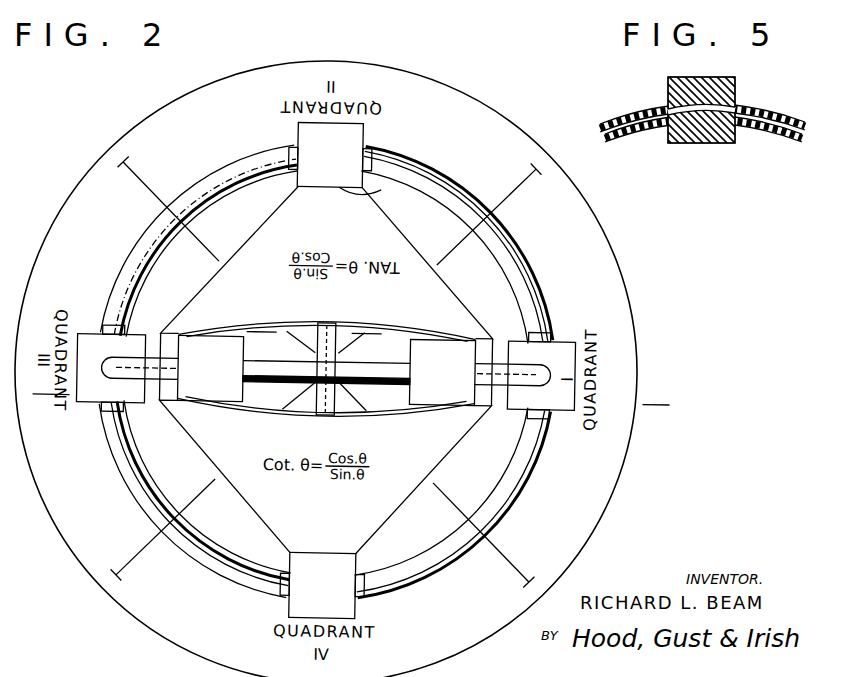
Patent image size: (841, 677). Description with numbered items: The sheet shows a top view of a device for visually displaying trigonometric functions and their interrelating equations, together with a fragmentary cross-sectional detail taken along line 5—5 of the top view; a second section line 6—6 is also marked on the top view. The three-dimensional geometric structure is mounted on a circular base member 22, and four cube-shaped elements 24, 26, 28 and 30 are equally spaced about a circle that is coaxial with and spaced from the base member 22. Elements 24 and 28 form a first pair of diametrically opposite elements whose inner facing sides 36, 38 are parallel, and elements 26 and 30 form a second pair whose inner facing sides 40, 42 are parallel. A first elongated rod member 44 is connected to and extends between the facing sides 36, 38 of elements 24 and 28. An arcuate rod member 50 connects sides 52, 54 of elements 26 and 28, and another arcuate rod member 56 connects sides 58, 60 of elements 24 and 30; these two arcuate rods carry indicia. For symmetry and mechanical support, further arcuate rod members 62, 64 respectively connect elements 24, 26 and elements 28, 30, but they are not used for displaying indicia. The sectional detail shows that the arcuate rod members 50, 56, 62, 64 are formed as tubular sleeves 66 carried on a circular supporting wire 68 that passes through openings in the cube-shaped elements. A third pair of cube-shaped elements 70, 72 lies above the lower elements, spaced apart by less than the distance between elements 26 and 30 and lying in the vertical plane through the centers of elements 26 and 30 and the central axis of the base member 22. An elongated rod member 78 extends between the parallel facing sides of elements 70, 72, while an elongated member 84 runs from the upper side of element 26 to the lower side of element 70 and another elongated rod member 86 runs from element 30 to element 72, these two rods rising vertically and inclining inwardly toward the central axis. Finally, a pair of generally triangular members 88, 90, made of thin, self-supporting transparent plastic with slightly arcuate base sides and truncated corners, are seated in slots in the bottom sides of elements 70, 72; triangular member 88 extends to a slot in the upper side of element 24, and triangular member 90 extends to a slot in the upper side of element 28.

In FIG. 2, the section line 5— 5 is at (324, 381).
In FIG. 2, the section line 6— 6 is at (351, 370).
In FIG. 2, the circular base member 22 is at (337, 366).
In FIG. 2, the cube-shaped element 24 is at (349, 153).
In FIG. 2, the cube-shaped element 26 is at (542, 390).
In FIG. 5, the cube-shaped element 28 is at (690, 148).
In FIG. 2, the cube-shaped element 30 is at (111, 382).
In FIG. 2, the inner facing side 36 is at (370, 191).
In FIG. 2, the inner facing side 38 is at (330, 569).
In FIG. 2, the inner facing side 40 is at (513, 346).
In FIG. 2, the inner facing side 42 is at (140, 338).
In FIG. 2, the first elongated rod member 44 is at (326, 369).
In FIG. 2, the arcuate rod member 50 is at (433, 505).
In FIG. 2, the side of element 26 52 is at (436, 480).
In FIG. 2, the side of element 28 54 is at (324, 462).
In FIG. 2, the arcuate rod member 56 is at (199, 226).
In FIG. 2, the side of element 24 58 is at (317, 148).
In FIG. 2, the side of element 30 60 is at (188, 259).
In FIG. 2, the arcuate rod member 62 is at (457, 243).
In FIG. 2, the arcuate rod member 64 is at (195, 499).
In FIG. 5, the tubular sleeve 66 is at (760, 110).
In FIG. 5, the circular supporting wire 68 is at (790, 143).
In FIG. 2, the upper cube-shaped element 70 is at (442, 358).
In FIG. 2, the upper cube-shaped element 72 is at (210, 356).
In FIG. 2, the elongated rod member 78 is at (326, 368).
In FIG. 2, the elongated member 84 is at (495, 380).
In FIG. 2, the elongated rod member 86 is at (143, 384).
In FIG. 2, the triangular member 88 is at (428, 263).
In FIG. 2, the triangular member 90 is at (225, 476).